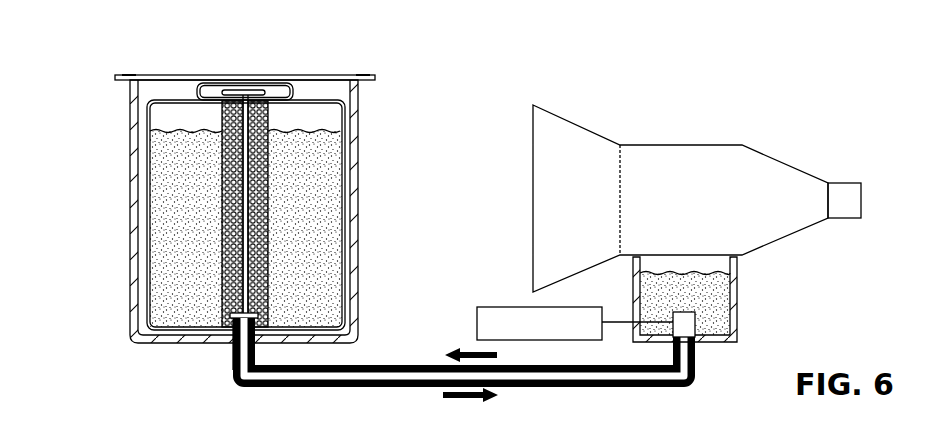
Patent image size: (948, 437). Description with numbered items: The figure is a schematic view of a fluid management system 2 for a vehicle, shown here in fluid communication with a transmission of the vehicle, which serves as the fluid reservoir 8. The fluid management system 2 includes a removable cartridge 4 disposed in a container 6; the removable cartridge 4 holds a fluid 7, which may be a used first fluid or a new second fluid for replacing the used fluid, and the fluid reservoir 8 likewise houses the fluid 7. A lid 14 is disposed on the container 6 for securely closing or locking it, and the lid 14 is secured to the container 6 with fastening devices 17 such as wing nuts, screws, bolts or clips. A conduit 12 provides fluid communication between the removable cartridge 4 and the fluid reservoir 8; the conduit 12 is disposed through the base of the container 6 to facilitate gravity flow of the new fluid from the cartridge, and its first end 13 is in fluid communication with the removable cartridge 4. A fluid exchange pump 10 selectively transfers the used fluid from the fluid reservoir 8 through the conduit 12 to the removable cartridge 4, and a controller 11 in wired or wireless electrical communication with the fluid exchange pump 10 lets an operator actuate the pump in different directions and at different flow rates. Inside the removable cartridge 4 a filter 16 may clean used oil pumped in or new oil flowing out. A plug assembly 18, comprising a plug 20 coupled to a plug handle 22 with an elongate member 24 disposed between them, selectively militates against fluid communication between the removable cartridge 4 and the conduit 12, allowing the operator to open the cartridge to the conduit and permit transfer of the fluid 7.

The fluid management system 2 is at (421, 46).
The removable cartridge 4 is at (345, 168).
The container 6 is at (359, 137).
The fluid 7 is at (179, 198).
The fluid reservoir 8 is at (680, 145).
The fluid exchange pump 10 is at (696, 325).
The controller 11 is at (488, 306).
The conduit 12 is at (405, 365).
The first end 13 is at (236, 347).
The lid 14 is at (318, 75).
The filter 16 is at (214, 243).
The fastening devices 17 is at (131, 74).
The plug assembly 18 is at (270, 224).
The plug 20 is at (235, 313).
The plug handle 22 is at (233, 91).
The elongate member 24 is at (244, 258).